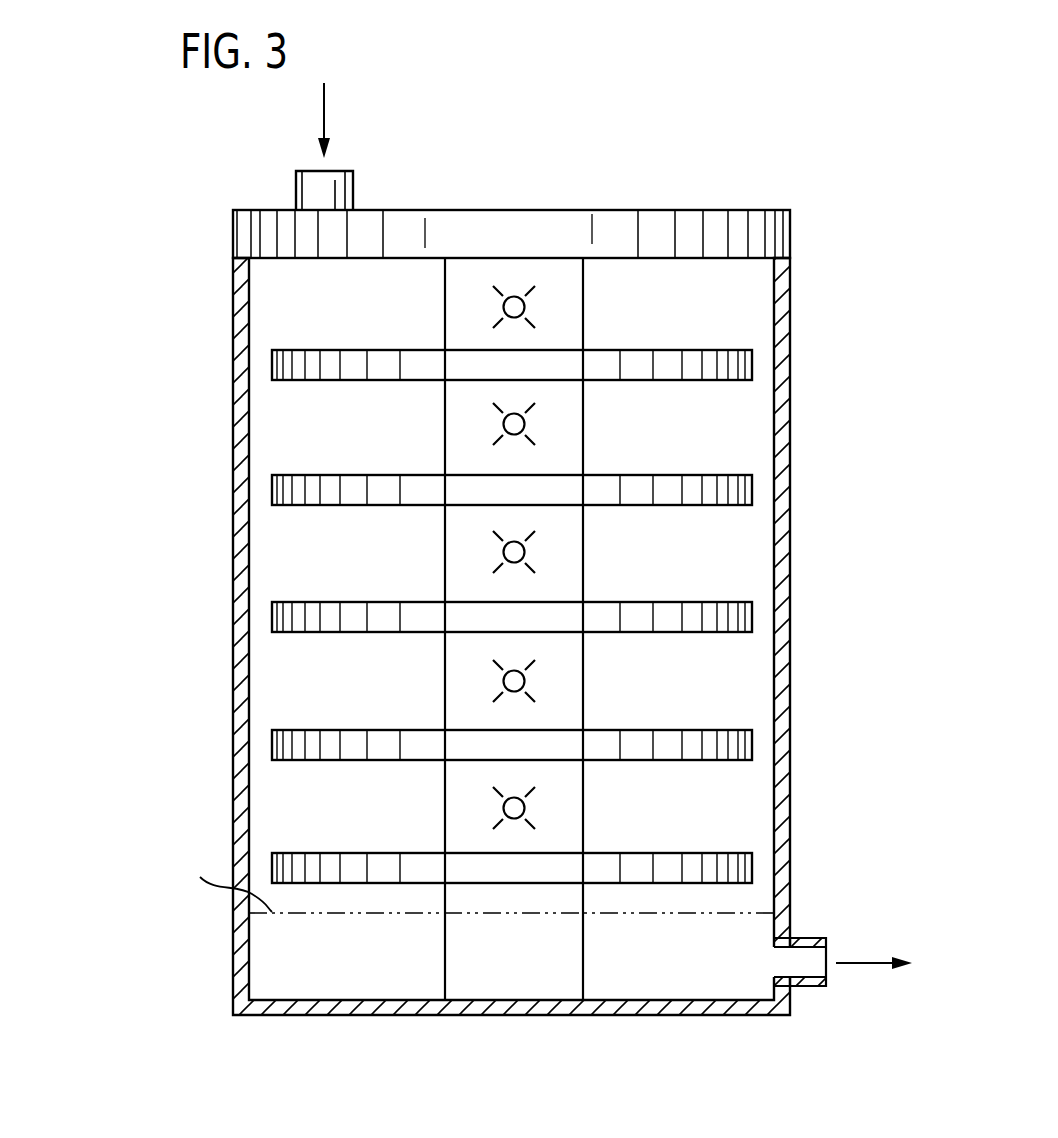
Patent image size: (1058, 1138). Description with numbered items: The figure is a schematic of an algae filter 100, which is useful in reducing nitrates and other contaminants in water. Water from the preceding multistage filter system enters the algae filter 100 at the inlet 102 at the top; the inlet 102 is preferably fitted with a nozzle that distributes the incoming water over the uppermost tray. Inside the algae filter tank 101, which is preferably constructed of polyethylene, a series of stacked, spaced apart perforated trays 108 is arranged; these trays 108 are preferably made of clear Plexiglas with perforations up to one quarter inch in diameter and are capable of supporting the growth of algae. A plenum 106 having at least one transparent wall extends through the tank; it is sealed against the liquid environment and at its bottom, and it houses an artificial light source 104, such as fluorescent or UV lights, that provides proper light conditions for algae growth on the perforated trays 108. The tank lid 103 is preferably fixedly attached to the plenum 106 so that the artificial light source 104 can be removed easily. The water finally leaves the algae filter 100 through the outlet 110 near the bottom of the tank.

The algae filter 100 is at (792, 163).
The algae filter tank 101 is at (233, 327).
The inlet 102 is at (355, 178).
The tank lid 103 is at (567, 210).
The artificial light source 104 is at (525, 302).
The plenum 106 is at (583, 552).
The perforated trays 108 is at (271, 618).
The outlet 110 is at (812, 988).